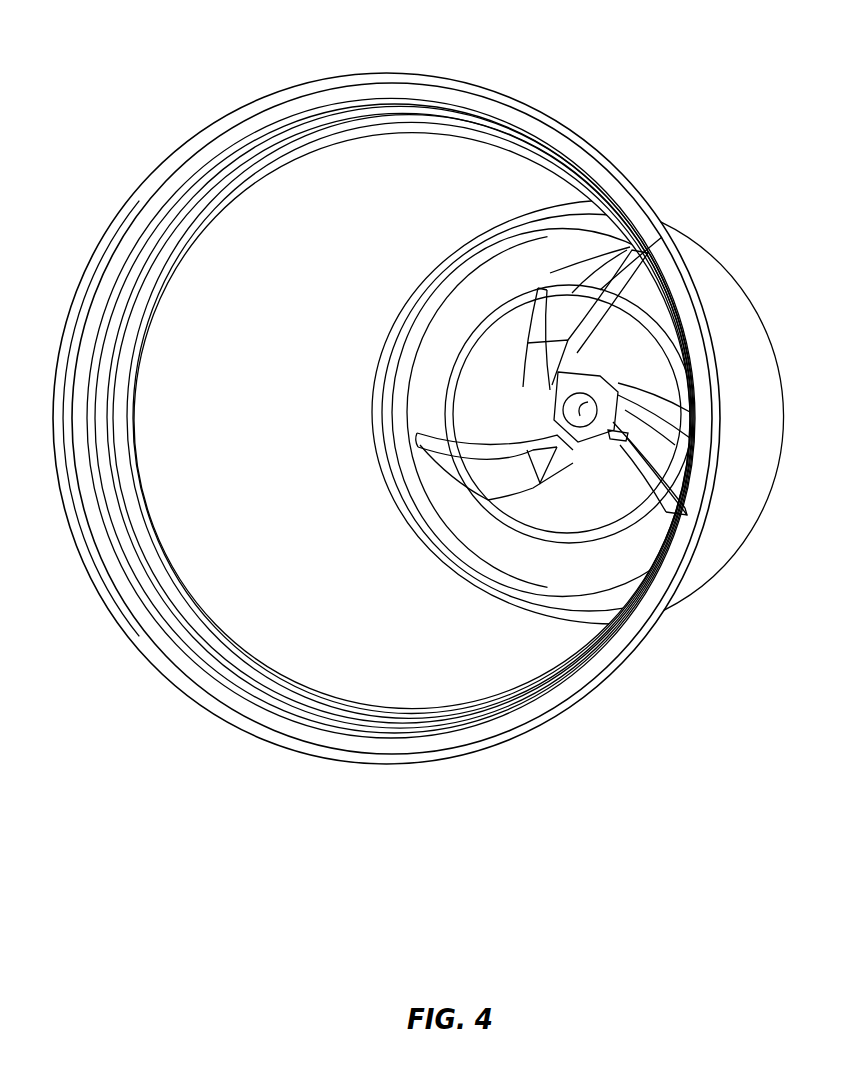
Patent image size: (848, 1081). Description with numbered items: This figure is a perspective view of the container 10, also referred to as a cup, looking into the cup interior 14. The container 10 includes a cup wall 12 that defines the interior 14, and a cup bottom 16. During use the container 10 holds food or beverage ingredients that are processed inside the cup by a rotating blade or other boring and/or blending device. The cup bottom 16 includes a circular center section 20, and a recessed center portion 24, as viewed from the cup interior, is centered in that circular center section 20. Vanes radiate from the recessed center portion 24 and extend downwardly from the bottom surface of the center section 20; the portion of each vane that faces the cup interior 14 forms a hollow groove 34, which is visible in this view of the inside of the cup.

The container 10 is at (661, 97).
The cup wall 12 is at (711, 585).
The interior 14 is at (422, 666).
The cup bottom 16 is at (494, 399).
The circular center section 20 is at (600, 516).
The recessed center portion 24 is at (605, 392).
The hollow groove 34 is at (632, 251).